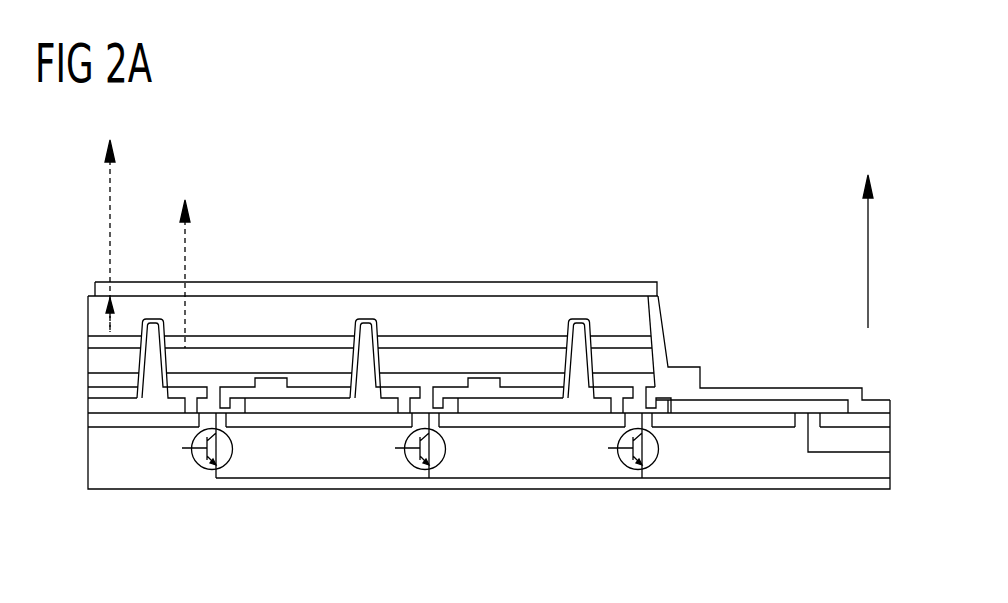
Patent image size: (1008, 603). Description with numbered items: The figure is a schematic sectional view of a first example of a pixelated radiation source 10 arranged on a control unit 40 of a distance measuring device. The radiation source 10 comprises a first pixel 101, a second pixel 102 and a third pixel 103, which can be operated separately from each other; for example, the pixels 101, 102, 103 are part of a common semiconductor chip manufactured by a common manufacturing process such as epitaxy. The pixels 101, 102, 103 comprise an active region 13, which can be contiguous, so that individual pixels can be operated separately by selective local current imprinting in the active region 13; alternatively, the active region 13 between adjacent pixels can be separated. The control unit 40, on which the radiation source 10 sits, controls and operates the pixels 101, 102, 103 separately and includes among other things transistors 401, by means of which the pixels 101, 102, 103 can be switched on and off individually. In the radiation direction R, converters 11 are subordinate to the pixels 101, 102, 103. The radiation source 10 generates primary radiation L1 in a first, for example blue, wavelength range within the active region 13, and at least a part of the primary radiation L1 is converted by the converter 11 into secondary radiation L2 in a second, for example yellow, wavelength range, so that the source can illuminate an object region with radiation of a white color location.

The pixelated radiation source 10 is at (461, 319).
The converter 11 is at (650, 292).
The active region 13 is at (428, 347).
The first pixel 101 is at (652, 273).
The second pixel 102 is at (420, 273).
The third pixel 103 is at (222, 273).
The control unit 40 is at (489, 468).
The transistor 401 is at (452, 448).
The primary radiation L1 is at (110, 327).
The secondary radiation L2 is at (110, 188).
The radiation direction R is at (868, 262).